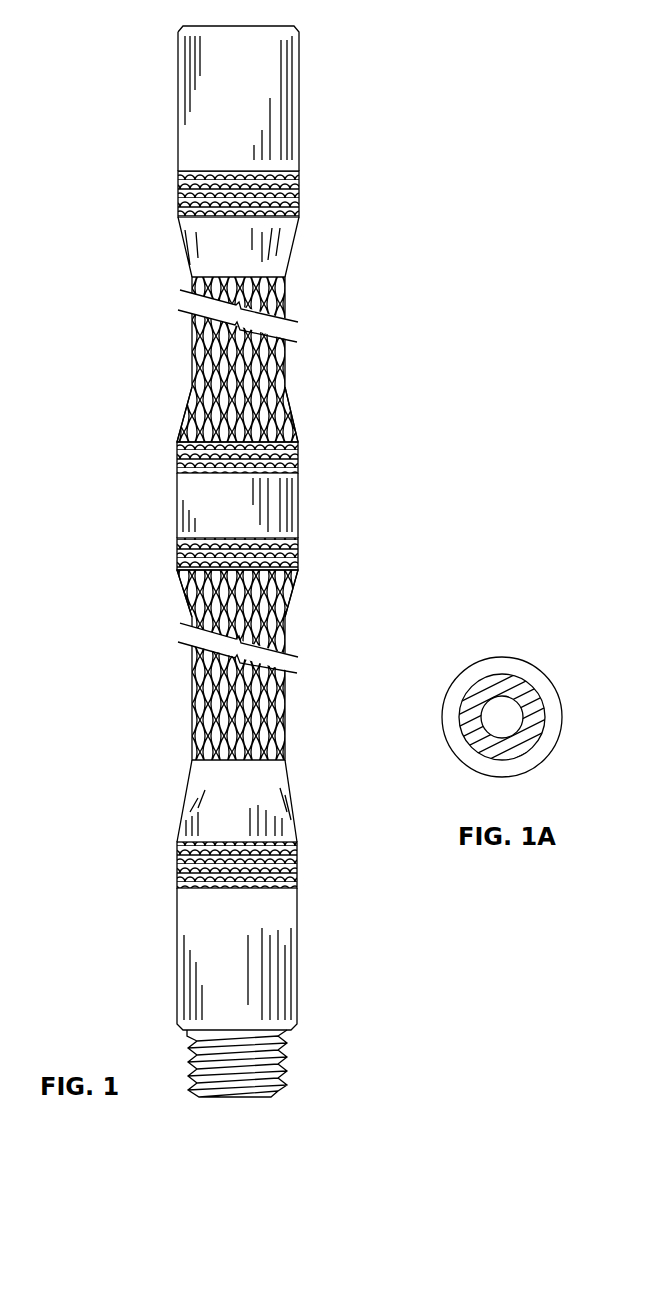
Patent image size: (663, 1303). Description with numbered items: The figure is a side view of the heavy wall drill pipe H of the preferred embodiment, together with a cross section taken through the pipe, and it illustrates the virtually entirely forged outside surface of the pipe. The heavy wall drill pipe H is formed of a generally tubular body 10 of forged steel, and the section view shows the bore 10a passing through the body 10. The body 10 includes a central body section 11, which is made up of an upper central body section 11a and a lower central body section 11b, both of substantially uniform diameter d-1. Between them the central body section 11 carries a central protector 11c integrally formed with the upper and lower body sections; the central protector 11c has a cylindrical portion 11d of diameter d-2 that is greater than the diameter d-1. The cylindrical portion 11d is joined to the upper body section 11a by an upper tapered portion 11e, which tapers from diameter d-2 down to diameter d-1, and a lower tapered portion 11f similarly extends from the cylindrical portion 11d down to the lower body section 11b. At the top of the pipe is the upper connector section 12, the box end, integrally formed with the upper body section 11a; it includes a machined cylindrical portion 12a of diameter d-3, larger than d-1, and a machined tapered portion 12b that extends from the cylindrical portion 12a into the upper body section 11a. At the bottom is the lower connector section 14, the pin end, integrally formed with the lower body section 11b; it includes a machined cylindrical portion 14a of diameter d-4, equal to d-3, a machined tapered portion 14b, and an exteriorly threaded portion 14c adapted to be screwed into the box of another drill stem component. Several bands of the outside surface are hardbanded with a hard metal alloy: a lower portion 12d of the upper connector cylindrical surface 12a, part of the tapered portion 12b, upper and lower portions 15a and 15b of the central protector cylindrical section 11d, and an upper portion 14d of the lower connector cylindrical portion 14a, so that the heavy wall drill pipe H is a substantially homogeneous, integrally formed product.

In FIG. 1, the generally tubular body 10 is at (260, 359).
In FIG. 1A, the bore 10a is at (515, 700).
In FIG. 1, the central body section 11 is at (238, 506).
In FIG. 1, the upper central body section 11a is at (286, 355).
In FIG. 1, the lower central body section 11b is at (237, 665).
In FIG. 1A, the lower central body section 11b is at (548, 718).
In FIG. 1, the central protector 11c is at (299, 493).
In FIG. 1, the cylindrical portion of central protector 11d is at (238, 507).
In FIG. 1, the upper tapered portion 11e is at (297, 430).
In FIG. 1, the lower tapered portion 11f is at (178, 592).
In FIG. 1, the upper connector section 12 is at (300, 130).
In FIG. 1, the cylindrical portion of upper connector section 12a is at (258, 95).
In FIG. 1, the tapered portion of upper connector section 12b is at (295, 243).
In FIG. 1, the lower portion of upper connector cylindrical surface 12d is at (300, 194).
In FIG. 1, the lower connector section 14 is at (258, 959).
In FIG. 1, the cylindrical portion of lower connector section 14a is at (238, 955).
In FIG. 1A, the cylindrical portion of lower connector section 14a is at (560, 737).
In FIG. 1, the tapered portion of lower connector section 14b is at (296, 826).
In FIG. 1A, the tapered portion of lower connector section 14b is at (497, 652).
In FIG. 1, the exteriorly threaded portion 14c is at (290, 1082).
In FIG. 1, the upper portion of lower connector cylindrical portion 14d is at (177, 862).
In FIG. 1, the upper portion of central protector cylindrical section 15a is at (177, 457).
In FIG. 1, the lower portion of central protector cylindrical section 15b is at (177, 555).
In FIG. 1, the heavy wall drill pipe H is at (150, 324).
In FIG. 1, the diameter of upper and lower body sections d-1 is at (255, 277).
In FIG. 1, the diameter of central protector cylindrical portion d-2 is at (250, 521).
In FIG. 1, the diameter of upper connector cylindrical portion d-3 is at (253, 44).
In FIG. 1, the diameter of lower connector cylindrical portion d-4 is at (249, 898).